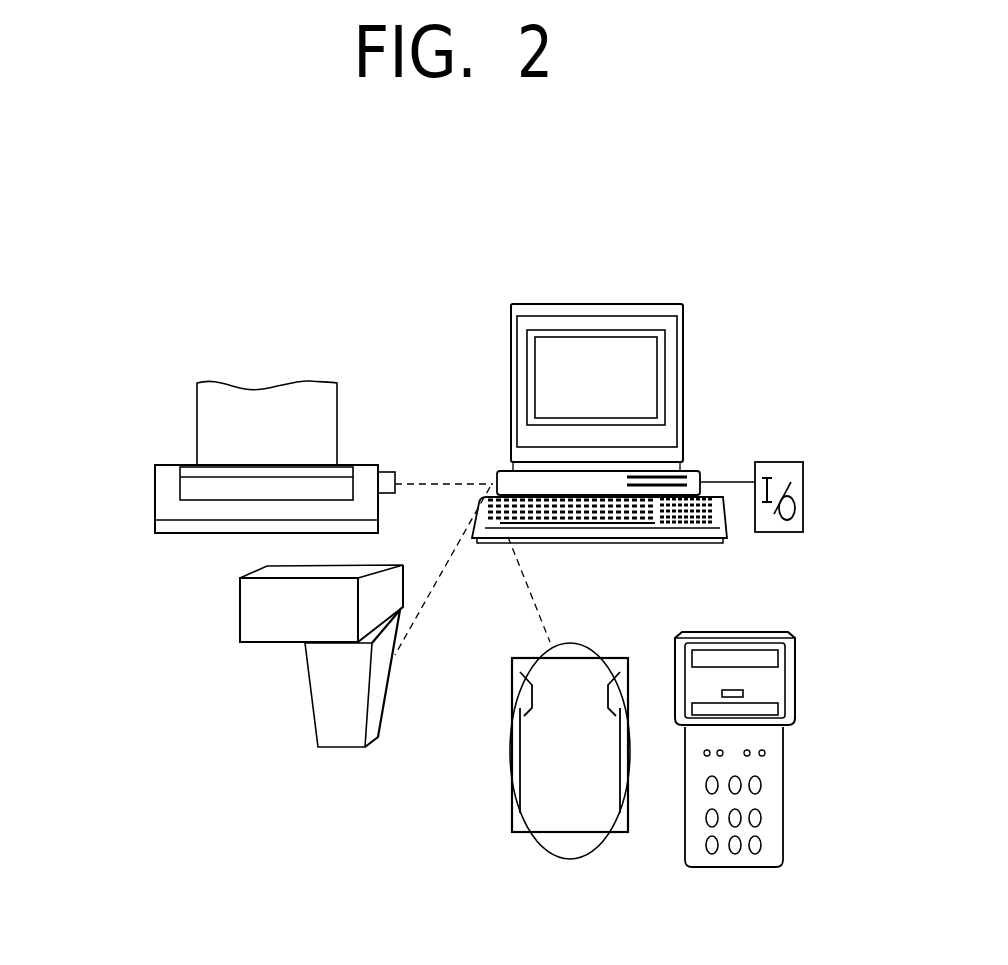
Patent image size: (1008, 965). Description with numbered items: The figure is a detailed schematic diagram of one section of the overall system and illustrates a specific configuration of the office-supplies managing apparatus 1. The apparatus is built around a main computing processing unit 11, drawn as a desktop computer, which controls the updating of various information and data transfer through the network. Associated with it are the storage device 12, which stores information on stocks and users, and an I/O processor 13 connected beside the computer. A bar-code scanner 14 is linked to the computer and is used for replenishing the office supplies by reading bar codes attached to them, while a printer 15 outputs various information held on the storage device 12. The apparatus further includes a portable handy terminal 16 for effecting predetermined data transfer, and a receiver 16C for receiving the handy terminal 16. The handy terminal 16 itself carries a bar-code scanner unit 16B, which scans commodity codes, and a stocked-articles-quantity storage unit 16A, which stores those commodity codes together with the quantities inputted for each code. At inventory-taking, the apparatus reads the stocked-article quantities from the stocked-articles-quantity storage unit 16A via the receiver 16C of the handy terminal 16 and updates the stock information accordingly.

The office-supplies managing apparatus 1 is at (423, 347).
The main computing processing unit 11 is at (690, 350).
The storage device 12 is at (690, 470).
The I/O processor 13 is at (803, 500).
The bar-code scanner 14 is at (260, 645).
The printer 15 is at (155, 493).
The portable handy terminal 16 is at (745, 867).
The stocked-articles-quantity storage unit 16A is at (755, 692).
The bar-code scanner unit 16B is at (750, 635).
The receiver 16C is at (540, 857).